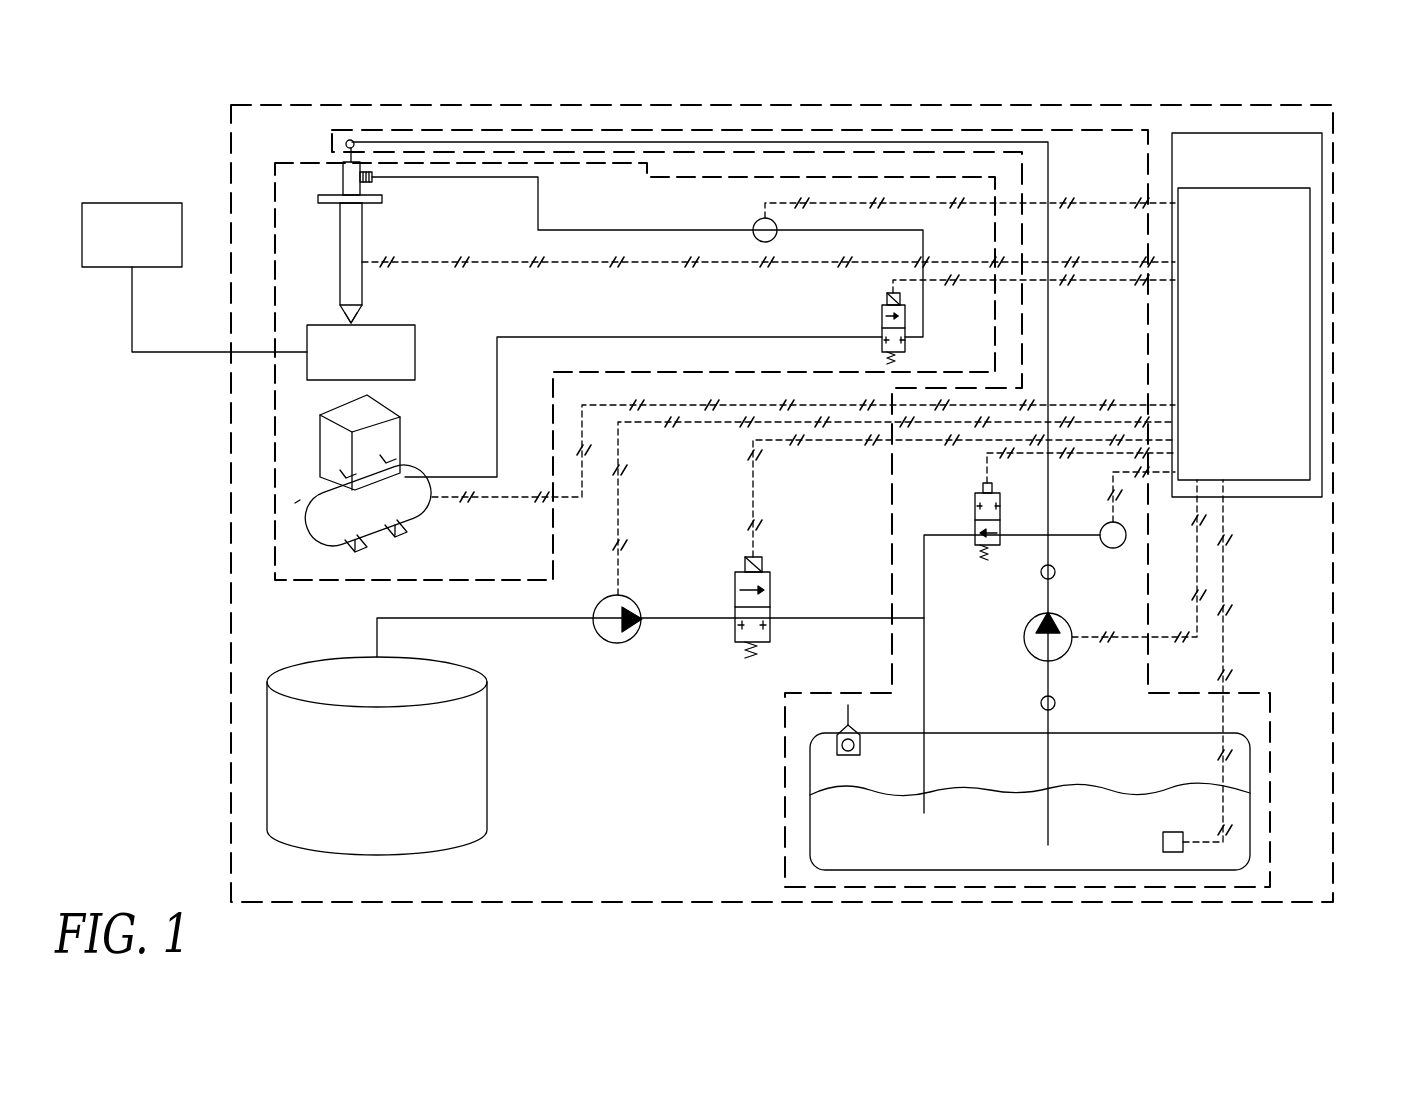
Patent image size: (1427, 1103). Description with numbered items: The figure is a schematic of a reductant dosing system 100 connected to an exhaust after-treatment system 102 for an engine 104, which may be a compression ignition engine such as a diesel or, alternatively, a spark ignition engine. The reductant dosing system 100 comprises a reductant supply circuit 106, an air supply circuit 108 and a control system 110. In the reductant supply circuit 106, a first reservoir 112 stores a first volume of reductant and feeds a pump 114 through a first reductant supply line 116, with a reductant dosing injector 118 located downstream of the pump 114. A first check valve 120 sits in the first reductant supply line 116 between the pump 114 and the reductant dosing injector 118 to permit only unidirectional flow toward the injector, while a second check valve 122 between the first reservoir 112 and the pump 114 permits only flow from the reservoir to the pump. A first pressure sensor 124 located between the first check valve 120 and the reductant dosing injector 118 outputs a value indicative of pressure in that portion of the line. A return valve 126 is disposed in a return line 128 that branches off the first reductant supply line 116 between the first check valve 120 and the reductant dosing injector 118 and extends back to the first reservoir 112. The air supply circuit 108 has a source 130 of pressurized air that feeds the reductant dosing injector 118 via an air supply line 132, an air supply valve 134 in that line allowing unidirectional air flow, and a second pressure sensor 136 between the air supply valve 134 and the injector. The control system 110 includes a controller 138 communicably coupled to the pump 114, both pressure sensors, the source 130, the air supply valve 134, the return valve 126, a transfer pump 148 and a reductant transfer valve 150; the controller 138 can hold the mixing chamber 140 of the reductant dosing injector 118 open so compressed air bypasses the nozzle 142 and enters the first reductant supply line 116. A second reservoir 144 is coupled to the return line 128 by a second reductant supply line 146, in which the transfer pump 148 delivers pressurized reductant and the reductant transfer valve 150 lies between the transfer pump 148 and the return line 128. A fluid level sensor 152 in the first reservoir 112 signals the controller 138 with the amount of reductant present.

The reductant dosing system 100 is at (1326, 101).
The exhaust after-treatment system 102 is at (377, 366).
The engine 104 is at (148, 248).
The reductant supply circuit 106 is at (1058, 128).
The air supply circuit 108 is at (272, 535).
The control system 110 is at (1255, 175).
The first reservoir 112 is at (1007, 771).
The pump 114 is at (1024, 638).
The first reductant supply line 116 is at (477, 140).
The reductant dosing injector 118 is at (335, 242).
The first check valve 120 is at (1056, 570).
The second check valve 122 is at (1045, 698).
The first pressure sensor 124 is at (1100, 527).
The return valve 126 is at (975, 488).
The return line 128 is at (1013, 532).
The source 130 is at (435, 518).
The air supply line 132 is at (577, 228).
The air supply valve 134 is at (886, 302).
The second pressure sensor 136 is at (752, 224).
The controller 138 is at (1235, 340).
The mixing chamber 140 is at (342, 172).
The nozzle 142 is at (348, 318).
The second reservoir 144 is at (393, 795).
The second reductant supply line 146 is at (375, 627).
The transfer pump 148 is at (613, 643).
The reductant transfer valve 150 is at (734, 578).
The fluid level sensor 152 is at (1162, 840).